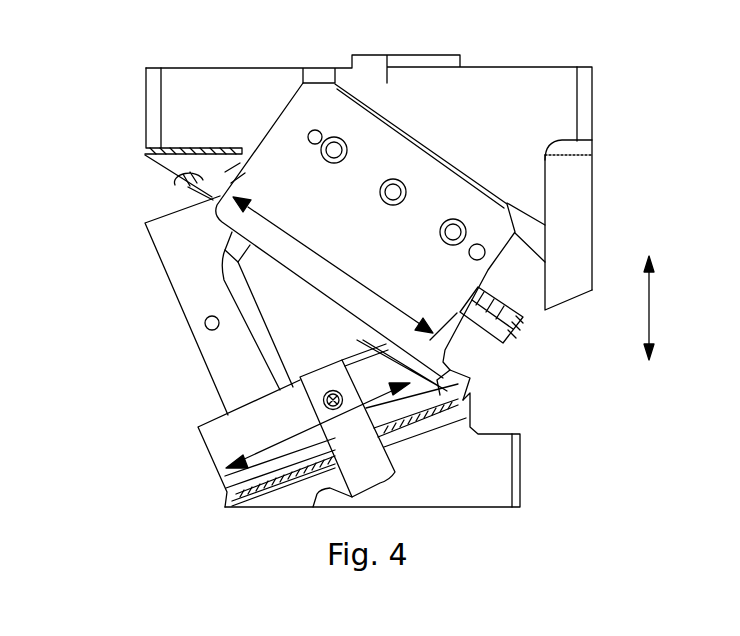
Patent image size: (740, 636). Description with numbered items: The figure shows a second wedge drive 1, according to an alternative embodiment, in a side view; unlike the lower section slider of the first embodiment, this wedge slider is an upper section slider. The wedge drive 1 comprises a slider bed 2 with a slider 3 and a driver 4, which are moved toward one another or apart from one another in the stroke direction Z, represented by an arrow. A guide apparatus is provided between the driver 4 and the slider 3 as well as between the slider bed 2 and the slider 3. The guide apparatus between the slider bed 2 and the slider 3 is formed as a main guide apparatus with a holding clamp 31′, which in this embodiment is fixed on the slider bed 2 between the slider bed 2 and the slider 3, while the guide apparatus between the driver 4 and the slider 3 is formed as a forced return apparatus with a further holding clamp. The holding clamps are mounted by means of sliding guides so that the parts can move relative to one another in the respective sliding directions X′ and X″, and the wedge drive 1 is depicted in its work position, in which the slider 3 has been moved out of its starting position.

The wedge drive 1 is at (68, 47).
The slider bed 2 is at (599, 77).
The slider 3 is at (167, 290).
The holding clamp 31′ is at (466, 330).
The driver 4 is at (520, 460).